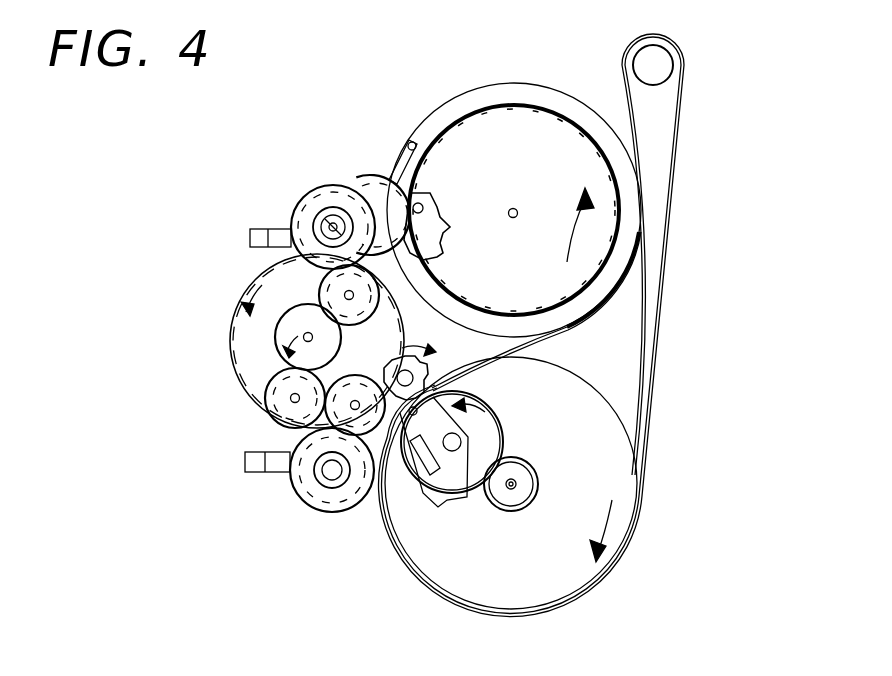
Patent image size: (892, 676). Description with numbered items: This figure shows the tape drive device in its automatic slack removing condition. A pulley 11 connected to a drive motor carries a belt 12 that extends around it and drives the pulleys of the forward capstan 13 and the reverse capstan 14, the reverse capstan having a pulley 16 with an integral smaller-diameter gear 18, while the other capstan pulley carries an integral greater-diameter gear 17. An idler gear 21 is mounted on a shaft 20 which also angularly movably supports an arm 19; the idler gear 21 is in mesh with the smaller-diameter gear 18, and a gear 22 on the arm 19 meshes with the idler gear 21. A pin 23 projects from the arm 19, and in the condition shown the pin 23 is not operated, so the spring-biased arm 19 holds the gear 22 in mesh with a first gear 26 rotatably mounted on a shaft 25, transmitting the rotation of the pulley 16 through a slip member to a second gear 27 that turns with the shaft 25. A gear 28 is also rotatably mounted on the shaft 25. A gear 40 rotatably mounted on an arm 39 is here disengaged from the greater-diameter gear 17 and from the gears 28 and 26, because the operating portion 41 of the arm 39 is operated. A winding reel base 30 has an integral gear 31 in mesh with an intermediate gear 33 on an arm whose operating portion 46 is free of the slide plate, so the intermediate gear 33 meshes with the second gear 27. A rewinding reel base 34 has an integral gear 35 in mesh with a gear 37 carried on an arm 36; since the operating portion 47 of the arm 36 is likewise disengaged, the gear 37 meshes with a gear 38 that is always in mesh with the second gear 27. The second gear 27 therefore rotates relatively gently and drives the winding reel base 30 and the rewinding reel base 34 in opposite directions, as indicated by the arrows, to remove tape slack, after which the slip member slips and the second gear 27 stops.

The pulley 11 is at (662, 70).
The belt 12 is at (677, 163).
The forward capstan 13 is at (513, 208).
The reverse capstan 14 is at (513, 485).
The pulley 16 is at (620, 557).
The greater-diameter gear 17 is at (617, 242).
The smaller-diameter gear 18 is at (497, 513).
The arm 19 is at (427, 490).
The shaft 20 is at (455, 440).
The idler gear 21 is at (467, 480).
The gear 22 is at (520, 357).
The pin 23 is at (412, 462).
The shaft 25 is at (304, 339).
The first gear 26 is at (238, 304).
The second gear 27 is at (276, 336).
The gear 28 is at (317, 341).
The winding reel base 30 is at (322, 207).
The gear 31 is at (300, 210).
The intermediate gear 33 is at (321, 287).
The rewinding reel base 34 is at (317, 484).
The gear 35 is at (327, 504).
The arm 36 is at (292, 476).
The gear 37 is at (352, 406).
The gear 38 is at (266, 398).
The arm 39 is at (420, 207).
The gear 40 is at (362, 175).
The operating portion 41 is at (412, 140).
The operating portion 46 is at (250, 238).
The operating portion 47 is at (245, 465).